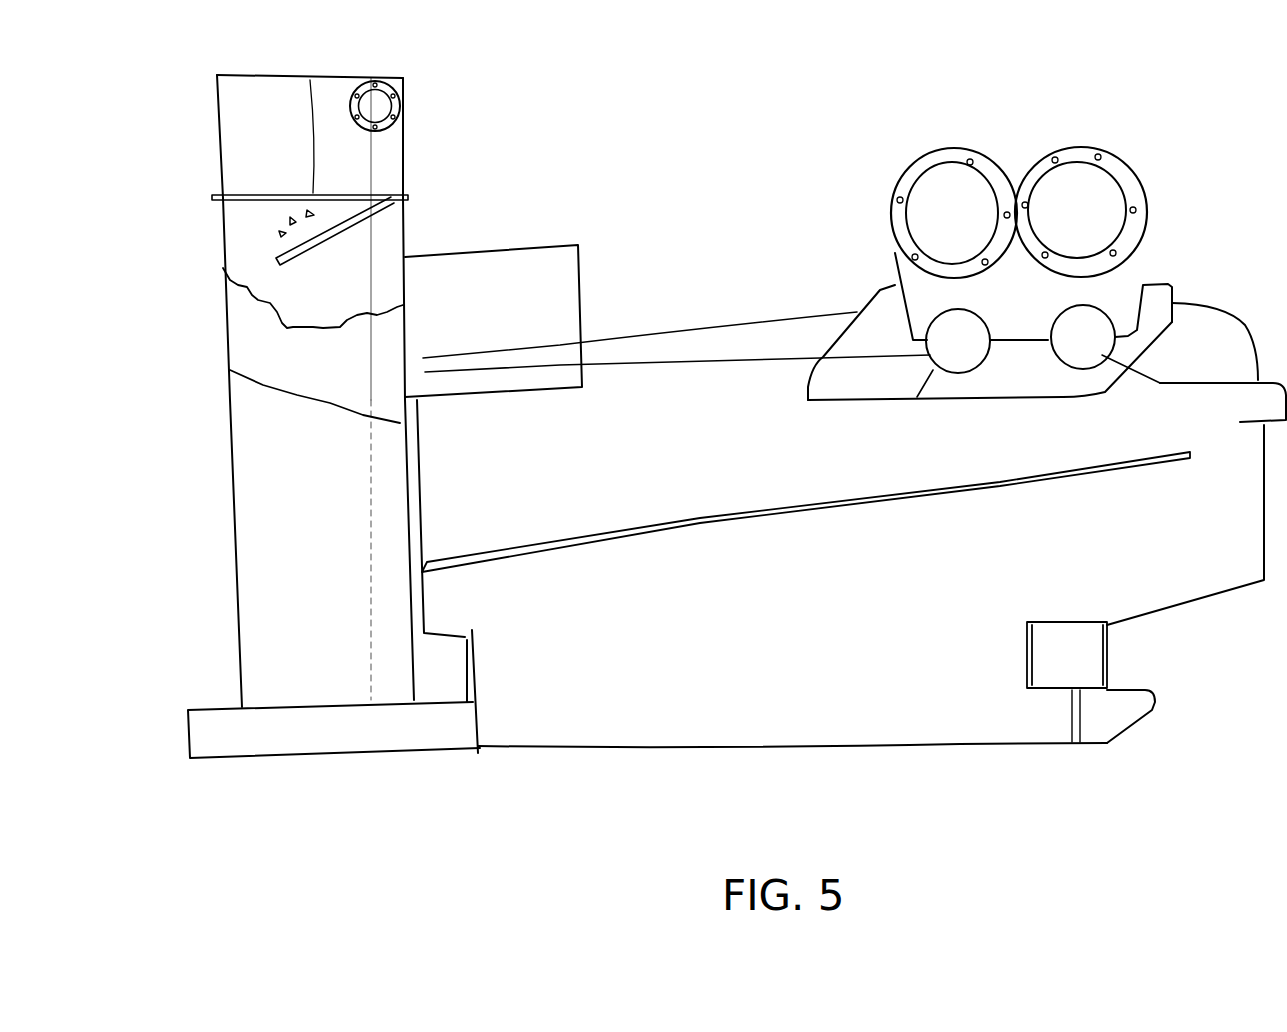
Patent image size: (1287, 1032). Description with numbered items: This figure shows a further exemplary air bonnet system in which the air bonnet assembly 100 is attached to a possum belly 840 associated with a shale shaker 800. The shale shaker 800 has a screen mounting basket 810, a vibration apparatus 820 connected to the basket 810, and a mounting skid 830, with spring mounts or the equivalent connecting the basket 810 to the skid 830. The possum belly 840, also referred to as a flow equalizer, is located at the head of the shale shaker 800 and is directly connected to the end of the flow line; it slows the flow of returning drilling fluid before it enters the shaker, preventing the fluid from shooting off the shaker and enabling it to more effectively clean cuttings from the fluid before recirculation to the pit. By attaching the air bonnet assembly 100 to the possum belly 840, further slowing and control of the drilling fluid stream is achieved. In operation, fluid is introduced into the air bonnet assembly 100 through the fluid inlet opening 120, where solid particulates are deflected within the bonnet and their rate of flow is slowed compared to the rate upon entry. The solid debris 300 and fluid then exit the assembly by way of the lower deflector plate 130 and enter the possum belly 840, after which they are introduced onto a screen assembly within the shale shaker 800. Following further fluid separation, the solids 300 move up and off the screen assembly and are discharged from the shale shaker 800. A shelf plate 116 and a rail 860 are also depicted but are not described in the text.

The air bonnet assembly 100 is at (330, 74).
The fluid inlet opening 120 is at (398, 101).
The shelf plate 116 is at (398, 194).
The lower deflector plate 130 is at (280, 253).
The solid debris 300 is at (262, 217).
The shale shaker 800 is at (737, 293).
The screen mounting basket 810 is at (457, 522).
The vibration apparatus 820 is at (940, 198).
The mounting skid 830 is at (1125, 705).
The possum belly 840 is at (360, 237).
The rail 860 is at (642, 522).